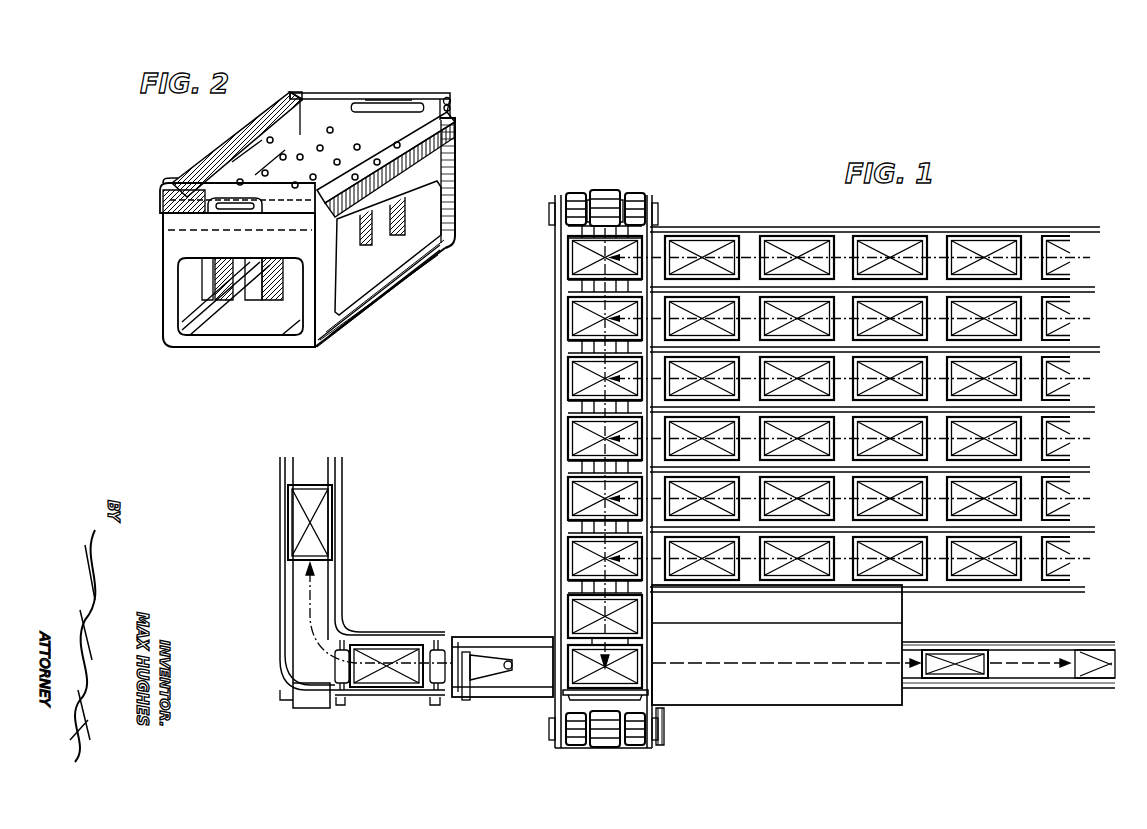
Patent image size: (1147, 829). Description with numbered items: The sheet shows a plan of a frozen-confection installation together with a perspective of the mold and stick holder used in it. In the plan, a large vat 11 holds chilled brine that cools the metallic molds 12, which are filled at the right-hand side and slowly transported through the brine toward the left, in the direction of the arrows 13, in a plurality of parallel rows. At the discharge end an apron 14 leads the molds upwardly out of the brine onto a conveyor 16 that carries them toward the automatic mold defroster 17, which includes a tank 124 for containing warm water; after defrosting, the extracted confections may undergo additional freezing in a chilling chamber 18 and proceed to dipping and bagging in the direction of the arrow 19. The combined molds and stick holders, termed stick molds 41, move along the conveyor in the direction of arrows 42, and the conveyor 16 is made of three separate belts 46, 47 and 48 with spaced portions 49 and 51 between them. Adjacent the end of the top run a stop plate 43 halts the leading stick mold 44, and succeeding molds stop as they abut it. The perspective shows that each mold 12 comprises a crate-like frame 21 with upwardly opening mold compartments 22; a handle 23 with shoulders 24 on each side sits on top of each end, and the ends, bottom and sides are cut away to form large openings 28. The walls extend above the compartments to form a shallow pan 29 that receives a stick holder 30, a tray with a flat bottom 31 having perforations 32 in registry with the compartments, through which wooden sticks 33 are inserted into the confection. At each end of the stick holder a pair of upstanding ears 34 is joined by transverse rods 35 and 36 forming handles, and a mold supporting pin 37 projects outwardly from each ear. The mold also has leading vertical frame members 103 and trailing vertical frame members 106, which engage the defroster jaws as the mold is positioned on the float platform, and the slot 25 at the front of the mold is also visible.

In FIG. 1, the vat 11 is at (1078, 222).
In FIG. 2, the mold 12 is at (462, 160).
In FIG. 1, the arrows 13 is at (755, 240).
In FIG. 1, the apron 14 is at (664, 228).
In FIG. 1, the conveyor 16 is at (568, 215).
In FIG. 1, the mold defroster 17 is at (545, 704).
In FIG. 1, the chilling chamber 18 is at (785, 700).
In FIG. 1, the arrow 19 is at (1032, 657).
In FIG. 2, the frame 21 is at (455, 190).
In FIG. 2, the mold compartments 22 is at (255, 318).
In FIG. 2, the handle 23 is at (392, 115).
In FIG. 2, the shoulders 24 is at (196, 222).
In FIG. 2, the slot 25 is at (218, 215).
In FIG. 2, the openings 28 is at (230, 328).
In FIG. 2, the shallow pan 29 is at (457, 125).
In FIG. 2, the stick holder 30 is at (222, 170).
In FIG. 1, the stick holder 30 is at (965, 672).
In FIG. 2, the flat bottom 31 is at (275, 150).
In FIG. 2, the perforations 32 is at (270, 160).
In FIG. 2, the wooden sticks 33 is at (295, 135).
In FIG. 2, the upstanding ears 34 is at (297, 96).
In FIG. 2, the transverse rod 35 is at (172, 205).
In FIG. 2, the transverse rod 36 is at (368, 104).
In FIG. 2, the mold supporting pin 37 is at (455, 112).
In FIG. 1, the stick molds 41 is at (567, 612).
In FIG. 1, the arrows 42 is at (567, 520).
In FIG. 1, the stop plate 43 is at (648, 697).
In FIG. 1, the leading stick mold 44 is at (630, 660).
In FIG. 1, the belt 46 is at (632, 196).
In FIG. 1, the belt 47 is at (617, 195).
In FIG. 1, the belt 48 is at (580, 195).
In FIG. 1, the spaced portion 49 is at (623, 195).
In FIG. 1, the spaced portion 51 is at (590, 195).
In FIG. 2, the leading vertical frame members 103 is at (176, 308).
In FIG. 2, the trailing vertical frame members 106 is at (455, 210).
In FIG. 1, the tank 124 is at (495, 637).